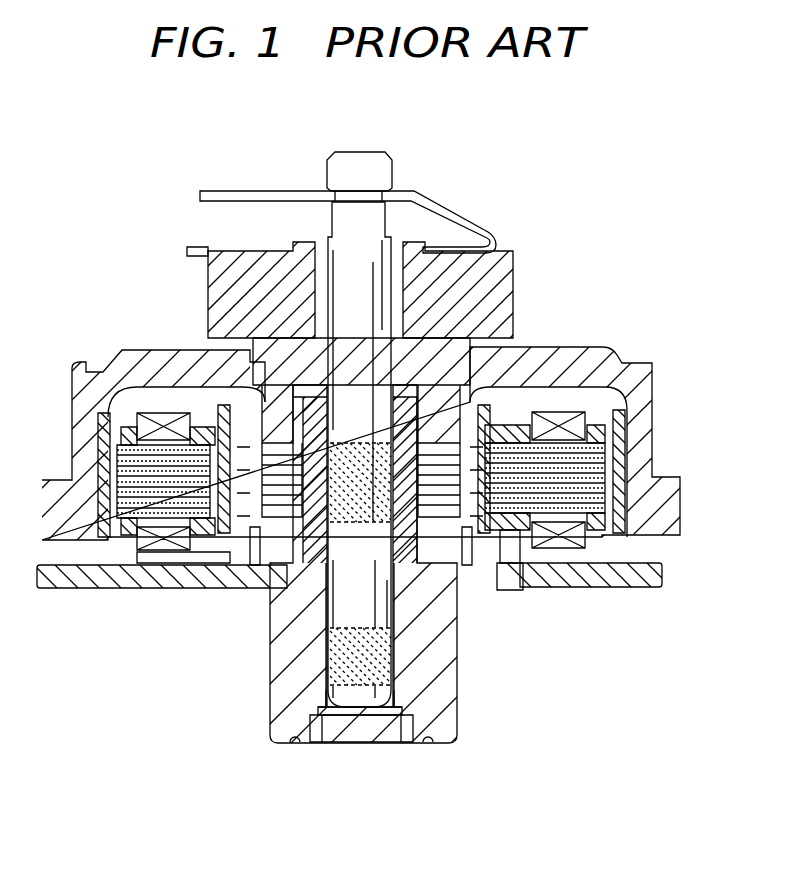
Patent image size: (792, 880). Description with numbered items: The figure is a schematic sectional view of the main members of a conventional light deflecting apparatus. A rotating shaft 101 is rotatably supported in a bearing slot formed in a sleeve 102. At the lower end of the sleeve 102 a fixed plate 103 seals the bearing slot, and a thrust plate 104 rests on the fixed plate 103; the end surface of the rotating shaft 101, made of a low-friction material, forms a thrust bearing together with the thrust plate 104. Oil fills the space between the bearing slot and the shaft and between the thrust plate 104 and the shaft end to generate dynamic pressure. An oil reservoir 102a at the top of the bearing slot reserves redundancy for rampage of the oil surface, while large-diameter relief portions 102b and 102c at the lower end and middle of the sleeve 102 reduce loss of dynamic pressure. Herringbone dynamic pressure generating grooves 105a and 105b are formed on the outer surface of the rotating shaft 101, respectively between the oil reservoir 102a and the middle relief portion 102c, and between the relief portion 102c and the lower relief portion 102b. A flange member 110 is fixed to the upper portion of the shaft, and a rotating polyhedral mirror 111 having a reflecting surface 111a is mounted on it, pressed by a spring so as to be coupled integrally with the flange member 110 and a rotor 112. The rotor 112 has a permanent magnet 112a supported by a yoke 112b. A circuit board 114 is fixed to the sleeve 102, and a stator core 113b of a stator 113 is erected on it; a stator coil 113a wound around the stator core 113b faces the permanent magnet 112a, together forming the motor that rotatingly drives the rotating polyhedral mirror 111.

The rotating shaft 101 is at (368, 176).
The sleeve 102 is at (492, 676).
The oil reservoir 102a is at (288, 392).
The relief portion 102b is at (330, 712).
The relief portion 102c is at (327, 620).
The fixed plate 103 is at (360, 745).
The thrust plate 104 is at (392, 716).
The herringbone dynamic pressure generating groove 105a is at (240, 590).
The herringbone dynamic pressure generating groove 105b is at (330, 663).
The flange member 110 is at (460, 333).
The rotating polyhedral mirror 111 is at (492, 250).
The reflecting surface 111a is at (515, 275).
The rotor 112 is at (396, 442).
The permanent magnet 112a is at (630, 440).
The yoke 112b is at (640, 383).
The stator 113 is at (598, 615).
The stator coil 113a is at (573, 587).
The stator core 113b is at (517, 587).
The circuit board 114 is at (662, 572).